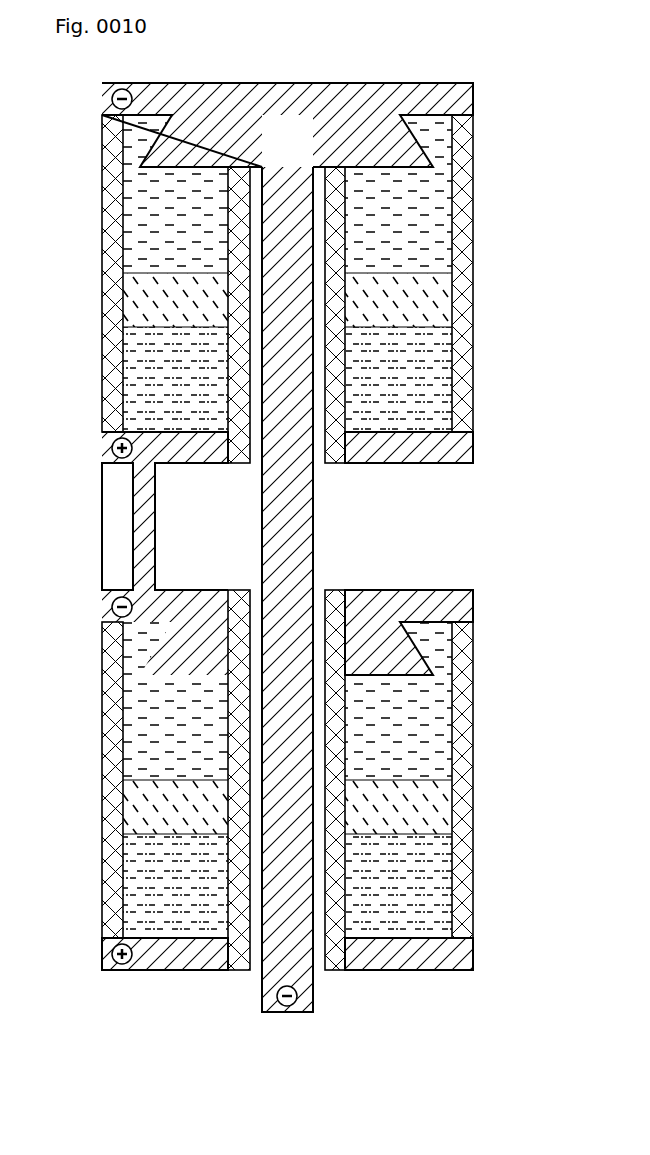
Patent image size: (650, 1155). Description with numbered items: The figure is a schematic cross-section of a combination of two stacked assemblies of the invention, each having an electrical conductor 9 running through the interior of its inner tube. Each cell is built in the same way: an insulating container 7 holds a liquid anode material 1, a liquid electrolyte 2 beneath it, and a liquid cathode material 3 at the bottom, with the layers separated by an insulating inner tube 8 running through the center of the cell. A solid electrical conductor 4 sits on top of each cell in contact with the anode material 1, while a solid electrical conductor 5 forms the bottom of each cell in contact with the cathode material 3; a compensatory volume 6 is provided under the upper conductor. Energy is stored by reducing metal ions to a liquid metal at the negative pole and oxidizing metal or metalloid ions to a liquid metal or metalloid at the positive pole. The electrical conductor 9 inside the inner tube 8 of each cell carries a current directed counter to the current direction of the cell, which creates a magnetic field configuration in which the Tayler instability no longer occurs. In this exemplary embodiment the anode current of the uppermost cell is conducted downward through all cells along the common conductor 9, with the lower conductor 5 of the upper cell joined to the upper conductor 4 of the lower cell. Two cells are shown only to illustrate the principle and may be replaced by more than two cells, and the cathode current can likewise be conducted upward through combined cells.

The liquid anode material 1 is at (177, 210).
The liquid electrolyte 2 is at (177, 300).
The liquid cathode material 3 is at (177, 373).
The solid electrical conductor 4 is at (212, 103).
The solid electrical conductor 5 is at (212, 448).
The compensatory volume 6 is at (430, 125).
The insulating container 7 is at (463, 213).
The insulating inner tube 8 is at (335, 287).
The electrical conductor 9 is at (287, 975).